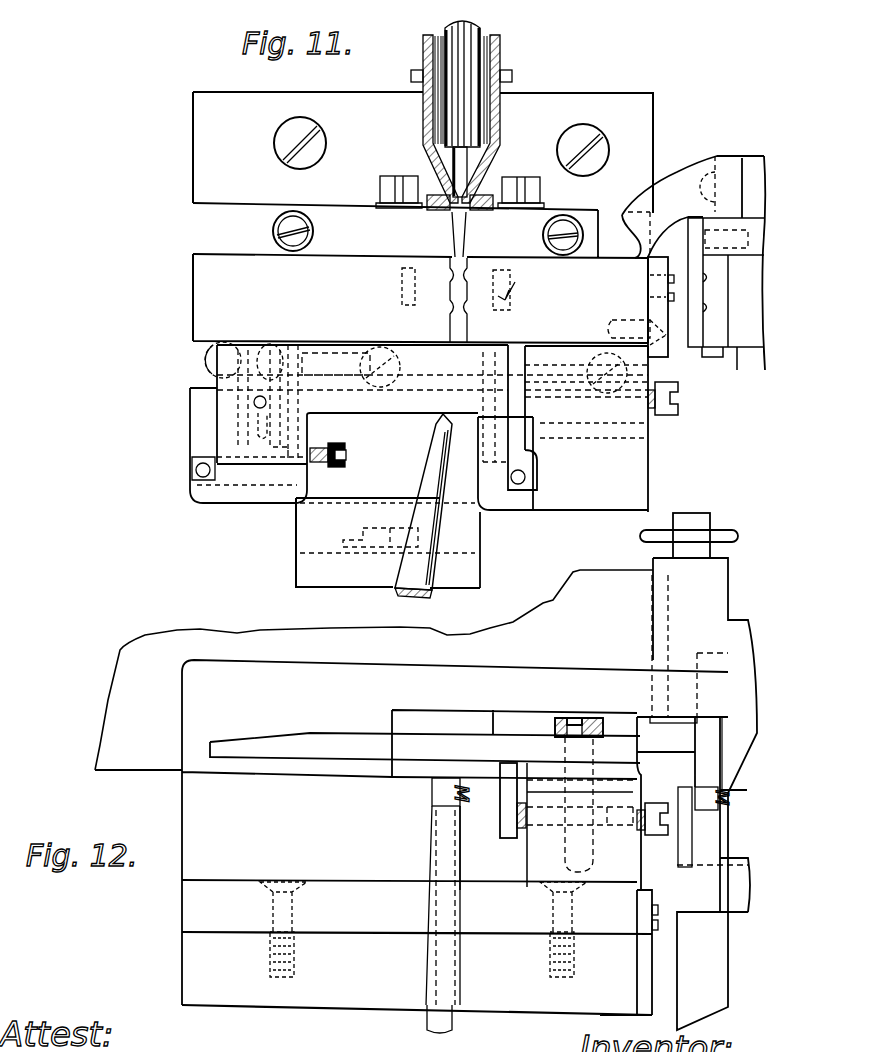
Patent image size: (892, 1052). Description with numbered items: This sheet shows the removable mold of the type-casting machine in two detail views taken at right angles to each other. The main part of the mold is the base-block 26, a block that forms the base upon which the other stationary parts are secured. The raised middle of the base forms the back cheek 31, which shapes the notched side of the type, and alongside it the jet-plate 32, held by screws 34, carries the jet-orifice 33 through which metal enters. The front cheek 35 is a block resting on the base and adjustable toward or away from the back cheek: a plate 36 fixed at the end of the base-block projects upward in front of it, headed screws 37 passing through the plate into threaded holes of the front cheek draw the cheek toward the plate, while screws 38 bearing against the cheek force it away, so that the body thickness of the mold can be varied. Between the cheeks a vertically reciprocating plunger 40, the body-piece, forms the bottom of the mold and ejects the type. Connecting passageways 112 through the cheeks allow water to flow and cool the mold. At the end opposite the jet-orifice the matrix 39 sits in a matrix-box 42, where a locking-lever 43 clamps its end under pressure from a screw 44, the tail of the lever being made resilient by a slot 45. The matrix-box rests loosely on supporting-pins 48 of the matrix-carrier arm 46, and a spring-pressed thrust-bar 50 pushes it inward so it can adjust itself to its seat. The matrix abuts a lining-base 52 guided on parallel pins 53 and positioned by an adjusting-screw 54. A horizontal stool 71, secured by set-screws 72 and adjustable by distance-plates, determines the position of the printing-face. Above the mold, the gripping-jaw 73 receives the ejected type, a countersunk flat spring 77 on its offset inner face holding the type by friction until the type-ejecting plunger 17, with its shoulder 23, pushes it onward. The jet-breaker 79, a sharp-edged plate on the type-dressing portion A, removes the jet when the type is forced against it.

In FIG. 11, the base-block 26 is at (615, 108).
In FIG. 12, the base-block 26 is at (417, 973).
In FIG. 11, the back cheek 31 is at (420, 298).
In FIG. 12, the back cheek 31 is at (409, 829).
In FIG. 11, the jet-plate 32 is at (420, 230).
In FIG. 11, the jet-orifice 33 is at (457, 220).
In FIG. 11, the screws 34 is at (290, 222).
In FIG. 11, the front cheek 35 is at (585, 314).
In FIG. 12, the front cheek 35 is at (548, 813).
In FIG. 11, the plate 36 is at (660, 264).
In FIG. 12, the plate 36 is at (642, 975).
In FIG. 11, the headed screws 37 is at (666, 343).
In FIG. 11, the screws 38 is at (672, 303).
In FIG. 12, the screws 38 is at (658, 906).
In FIG. 11, the matrix 39 is at (293, 363).
In FIG. 12, the plunger 40 is at (447, 919).
In FIG. 11, the matrix-box 42 is at (228, 430).
In FIG. 11, the locking-lever 43 is at (253, 445).
In FIG. 11, the screw 44 is at (347, 452).
In FIG. 11, the slot 45 is at (267, 450).
In FIG. 11, the matrix-carrier arm 46 is at (388, 543).
In FIG. 11, the supporting-pins 48 is at (198, 476).
In FIG. 11, the thrust-bar 50 is at (433, 531).
In FIG. 11, the lining-base 52 is at (520, 438).
In FIG. 12, the lining-base 52 is at (508, 834).
In FIG. 11, the parallel pins 53 is at (700, 442).
In FIG. 11, the adjusting-screw 54 is at (680, 400).
In FIG. 12, the adjusting-screw 54 is at (659, 837).
In FIG. 11, the jet-breaker 79 is at (680, 182).
In FIG. 11, the type-dressing portion A is at (743, 247).
In FIG. 11, the connecting passageways 112 is at (462, 289).
In FIG. 12, the type-ejecting plunger 17 is at (700, 530).
In FIG. 12, the shoulder 23 is at (736, 538).
In FIG. 12, the stool 71 is at (318, 742).
In FIG. 12, the set-screws 72 is at (586, 680).
In FIG. 12, the gripping-jaw 73 is at (719, 801).
In FIG. 12, the flat spring 77 is at (722, 770).